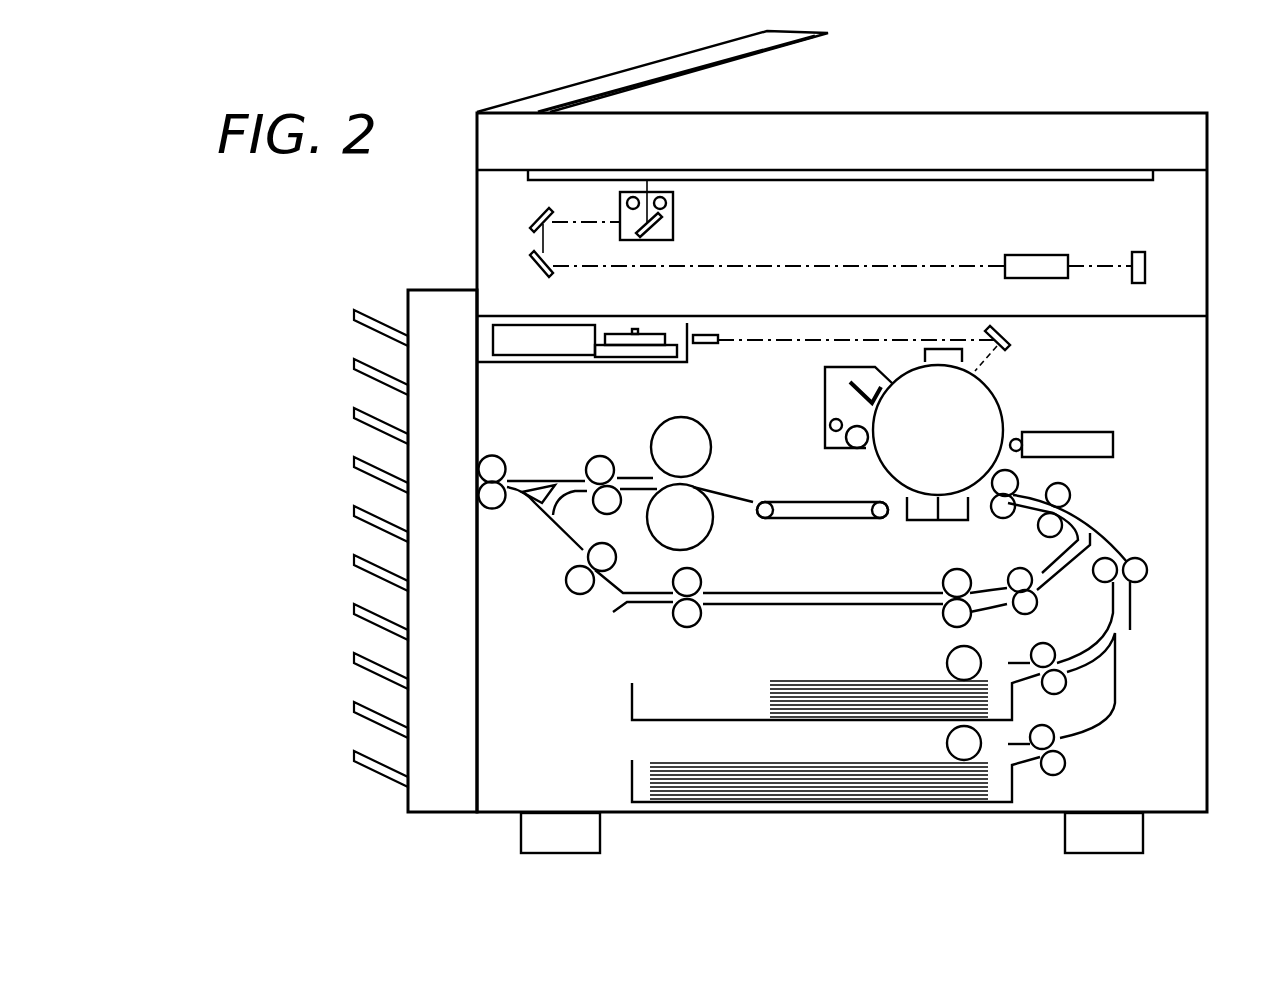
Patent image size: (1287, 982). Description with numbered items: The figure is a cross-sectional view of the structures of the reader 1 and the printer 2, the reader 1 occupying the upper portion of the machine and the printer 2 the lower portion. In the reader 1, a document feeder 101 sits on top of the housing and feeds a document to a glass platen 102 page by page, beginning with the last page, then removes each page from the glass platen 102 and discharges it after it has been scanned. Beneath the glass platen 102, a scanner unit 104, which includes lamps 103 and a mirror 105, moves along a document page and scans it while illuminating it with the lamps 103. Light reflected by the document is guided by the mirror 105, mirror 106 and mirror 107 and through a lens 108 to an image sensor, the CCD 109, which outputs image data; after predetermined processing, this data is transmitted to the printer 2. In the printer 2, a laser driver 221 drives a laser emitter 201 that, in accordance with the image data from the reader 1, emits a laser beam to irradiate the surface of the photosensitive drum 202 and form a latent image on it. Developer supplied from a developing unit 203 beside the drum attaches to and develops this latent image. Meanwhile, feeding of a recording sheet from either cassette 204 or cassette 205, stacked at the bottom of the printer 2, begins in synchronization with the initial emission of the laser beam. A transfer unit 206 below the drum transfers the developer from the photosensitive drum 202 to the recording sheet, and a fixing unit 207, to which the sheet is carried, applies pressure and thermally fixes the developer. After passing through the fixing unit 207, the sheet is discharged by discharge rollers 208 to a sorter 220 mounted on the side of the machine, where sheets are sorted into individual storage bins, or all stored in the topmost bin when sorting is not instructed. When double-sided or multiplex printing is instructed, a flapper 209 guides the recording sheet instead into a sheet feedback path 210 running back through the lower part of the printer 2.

The reader 1 is at (1243, 33).
The printer 2 is at (1243, 325).
The document feeder 101 is at (600, 77).
The glass platen 102 is at (1096, 177).
The lamps 103 is at (661, 200).
The scanner unit 104 is at (677, 212).
The mirror 105 is at (673, 233).
The mirror 106 is at (535, 217).
The mirror 107 is at (530, 256).
The lens 108 is at (1049, 256).
The image sensor (CCD) 109 is at (1139, 253).
The laser emitter 201 is at (617, 331).
The photosensitive drum 202 is at (893, 457).
The developing unit 203 is at (1085, 432).
The cassette 204 is at (1000, 700).
The cassette 205 is at (1000, 782).
The transfer unit 206 is at (952, 513).
The fixing unit 207 is at (663, 503).
The discharge rollers 208 is at (487, 493).
The flapper 209 is at (527, 510).
The sheet feedback path 210 is at (789, 606).
The sorter 220 is at (441, 290).
The laser driver 221 is at (540, 347).